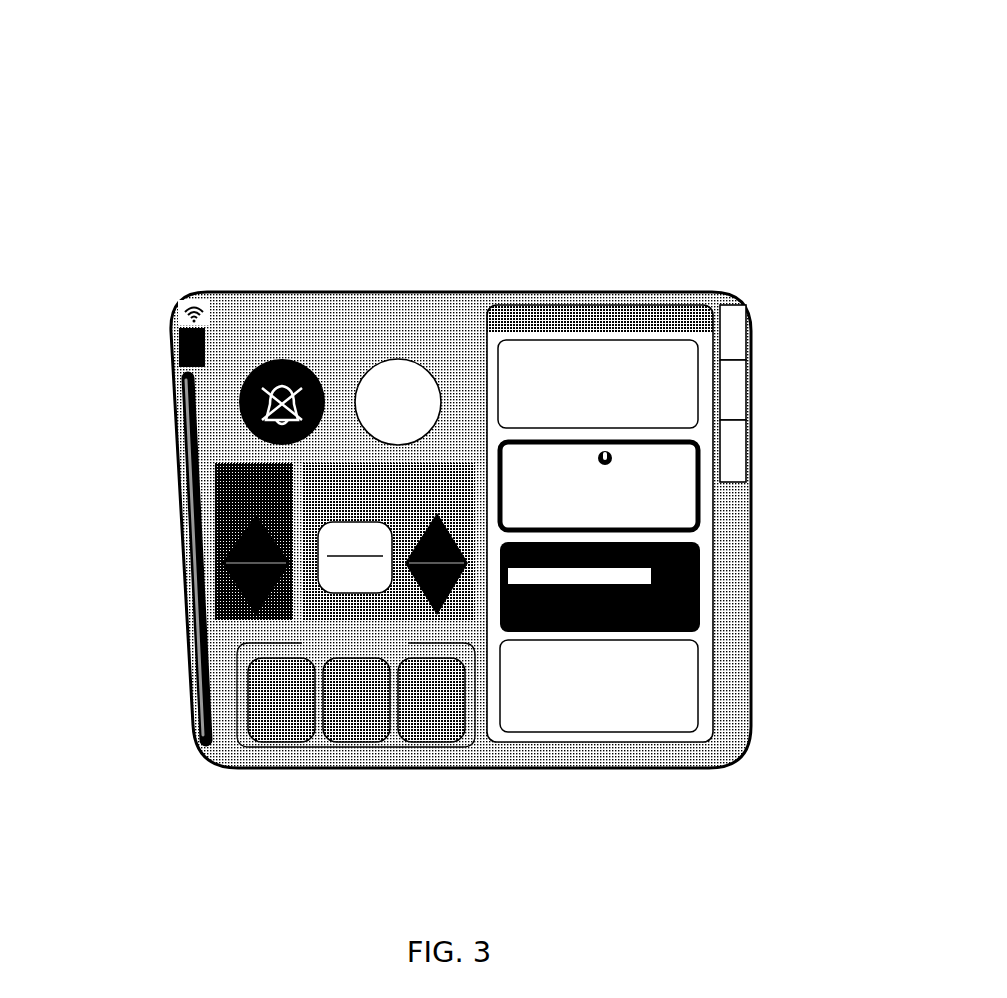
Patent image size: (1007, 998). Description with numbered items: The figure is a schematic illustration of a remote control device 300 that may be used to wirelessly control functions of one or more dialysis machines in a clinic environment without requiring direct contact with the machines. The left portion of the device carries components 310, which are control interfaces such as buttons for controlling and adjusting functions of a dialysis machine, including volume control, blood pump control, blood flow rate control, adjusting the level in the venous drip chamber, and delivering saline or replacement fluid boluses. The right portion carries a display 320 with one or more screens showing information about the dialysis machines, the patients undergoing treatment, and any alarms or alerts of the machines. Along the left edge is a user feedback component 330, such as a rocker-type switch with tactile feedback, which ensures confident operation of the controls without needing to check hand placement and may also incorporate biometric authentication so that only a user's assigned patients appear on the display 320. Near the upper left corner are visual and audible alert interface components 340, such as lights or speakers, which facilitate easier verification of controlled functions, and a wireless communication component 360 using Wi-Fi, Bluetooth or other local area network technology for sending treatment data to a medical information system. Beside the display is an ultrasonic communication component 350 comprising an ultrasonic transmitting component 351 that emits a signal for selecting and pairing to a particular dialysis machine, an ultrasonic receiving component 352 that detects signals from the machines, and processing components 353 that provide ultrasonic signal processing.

The remote control device 300 is at (243, 113).
The components 310 is at (213, 272).
The display 320 is at (487, 272).
The user feedback component 330 is at (177, 520).
The visual and audible alert interface components 340 is at (175, 349).
The ultrasonic communication component 350 is at (860, 360).
The ultrasonic transmitting component 351 is at (757, 333).
The ultrasonic receiving component 352 is at (757, 400).
The processing components 353 is at (757, 467).
The wireless communication component 360 is at (177, 302).